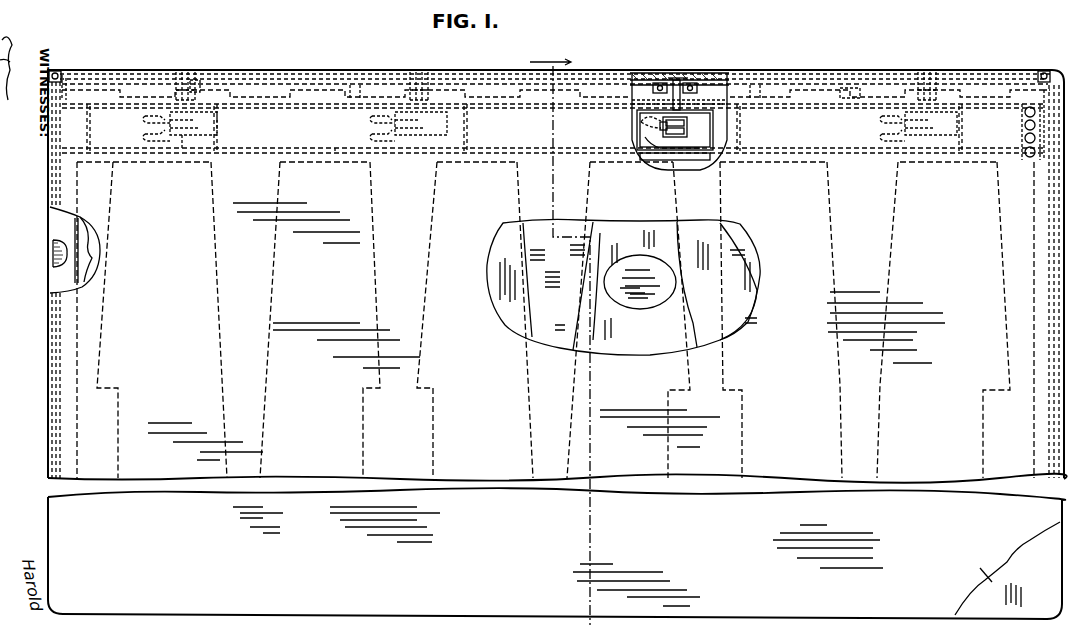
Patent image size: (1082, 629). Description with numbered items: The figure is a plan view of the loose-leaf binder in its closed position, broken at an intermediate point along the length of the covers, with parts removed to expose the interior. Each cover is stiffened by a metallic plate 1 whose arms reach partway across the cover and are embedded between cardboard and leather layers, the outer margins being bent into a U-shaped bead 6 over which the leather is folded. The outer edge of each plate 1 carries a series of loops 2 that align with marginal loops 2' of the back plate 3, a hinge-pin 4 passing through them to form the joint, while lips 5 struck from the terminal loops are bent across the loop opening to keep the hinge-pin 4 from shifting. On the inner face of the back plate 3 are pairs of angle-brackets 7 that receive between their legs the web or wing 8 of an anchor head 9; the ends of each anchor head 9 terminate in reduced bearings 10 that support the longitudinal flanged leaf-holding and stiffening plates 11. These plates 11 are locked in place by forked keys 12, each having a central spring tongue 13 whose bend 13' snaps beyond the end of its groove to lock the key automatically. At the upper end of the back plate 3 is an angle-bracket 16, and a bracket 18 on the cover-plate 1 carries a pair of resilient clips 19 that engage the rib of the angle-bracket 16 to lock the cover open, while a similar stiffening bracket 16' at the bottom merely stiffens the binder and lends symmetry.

The metallic plate 1 is at (678, 160).
The loops 2 is at (555, 98).
The marginal loops 2' is at (573, 71).
The back plate 3 is at (684, 82).
The hinge-pin 4 is at (848, 90).
The lips 5 is at (562, 334).
The U-shaped bead 6 is at (52, 258).
The angle-brackets 7 is at (180, 72).
The web or wing 8 is at (196, 72).
The anchor head 9 is at (648, 148).
The reduced extensions or bearings 10 is at (181, 150).
The leaf-holding and stiffening plates 11 is at (335, 150).
The forked keys 12 is at (218, 133).
The spring tongue 13 is at (534, 153).
The bend of the tongue 13' is at (628, 162).
The angle-bracket 16 is at (556, 258).
The stiffening bracket 16' is at (83, 69).
The bracket 18 is at (1024, 118).
The clips or resilient arms 19 is at (1050, 104).